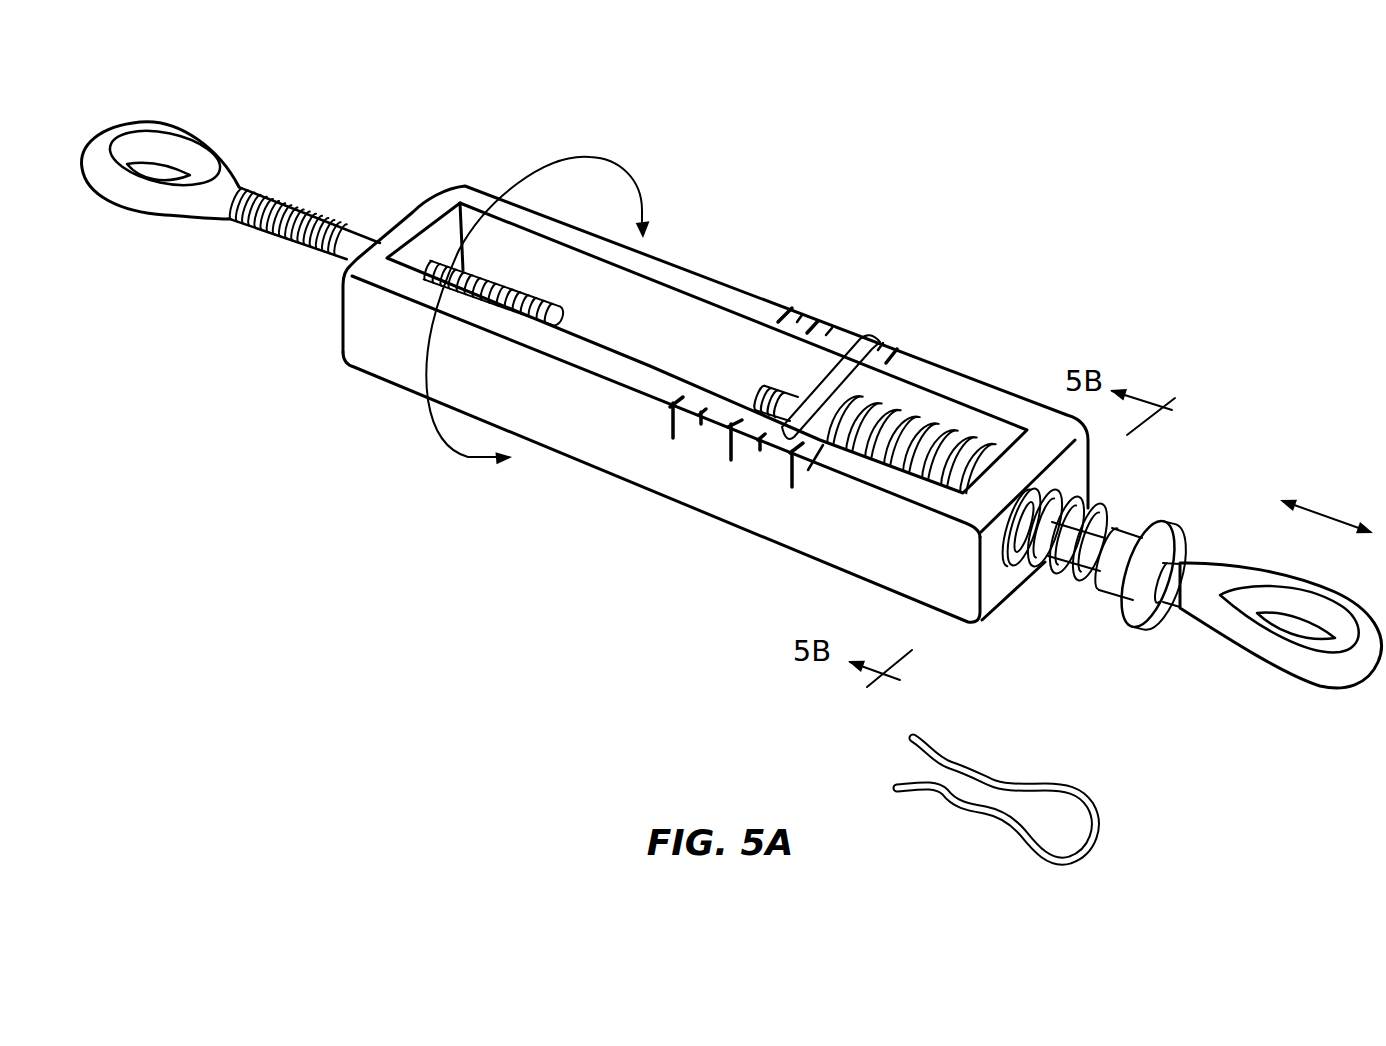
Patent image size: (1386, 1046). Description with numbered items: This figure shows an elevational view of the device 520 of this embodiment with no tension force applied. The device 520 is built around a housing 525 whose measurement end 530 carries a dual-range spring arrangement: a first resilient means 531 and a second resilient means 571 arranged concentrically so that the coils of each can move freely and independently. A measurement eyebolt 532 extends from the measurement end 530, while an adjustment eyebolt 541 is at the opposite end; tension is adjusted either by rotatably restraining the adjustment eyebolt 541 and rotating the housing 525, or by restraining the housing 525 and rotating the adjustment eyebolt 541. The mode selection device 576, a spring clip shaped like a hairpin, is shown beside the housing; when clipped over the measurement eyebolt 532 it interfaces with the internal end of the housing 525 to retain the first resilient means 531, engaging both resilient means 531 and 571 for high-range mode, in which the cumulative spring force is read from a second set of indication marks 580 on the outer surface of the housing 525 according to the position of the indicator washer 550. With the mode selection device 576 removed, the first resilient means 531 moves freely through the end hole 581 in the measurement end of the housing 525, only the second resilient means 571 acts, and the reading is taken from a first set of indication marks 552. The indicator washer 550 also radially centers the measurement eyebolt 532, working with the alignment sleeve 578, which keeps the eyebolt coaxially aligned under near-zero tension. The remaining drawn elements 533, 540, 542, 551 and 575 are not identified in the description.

The device 520 is at (478, 525).
The housing 525 is at (373, 357).
The measurement end 530 is at (1111, 263).
The first resilient means 531 is at (1062, 573).
The measurement eyebolt 532 is at (1072, 572).
The eye 533 is at (1290, 660).
The first end connector (threaded eye bolt) 540 is at (498, 145).
The adjustment eyebolt 541 is at (277, 240).
The eye 542 is at (142, 216).
The indicator washer 550 is at (840, 338).
The set screw 551 is at (793, 390).
The first set of indication marks 552 is at (674, 440).
The second resilient means 571 is at (940, 420).
The spring 575 is at (895, 406).
The mode selection device 576 is at (1100, 832).
The alignment sleeve 578 is at (1140, 526).
The second set of indication marks 580 is at (810, 306).
The end hole 581 is at (1085, 478).